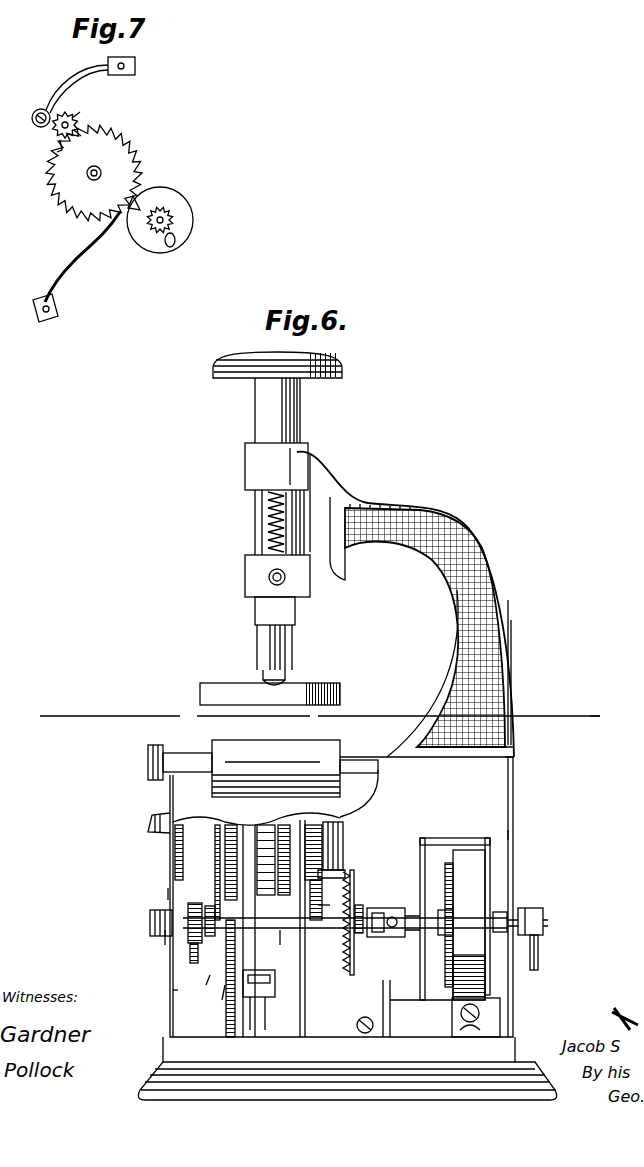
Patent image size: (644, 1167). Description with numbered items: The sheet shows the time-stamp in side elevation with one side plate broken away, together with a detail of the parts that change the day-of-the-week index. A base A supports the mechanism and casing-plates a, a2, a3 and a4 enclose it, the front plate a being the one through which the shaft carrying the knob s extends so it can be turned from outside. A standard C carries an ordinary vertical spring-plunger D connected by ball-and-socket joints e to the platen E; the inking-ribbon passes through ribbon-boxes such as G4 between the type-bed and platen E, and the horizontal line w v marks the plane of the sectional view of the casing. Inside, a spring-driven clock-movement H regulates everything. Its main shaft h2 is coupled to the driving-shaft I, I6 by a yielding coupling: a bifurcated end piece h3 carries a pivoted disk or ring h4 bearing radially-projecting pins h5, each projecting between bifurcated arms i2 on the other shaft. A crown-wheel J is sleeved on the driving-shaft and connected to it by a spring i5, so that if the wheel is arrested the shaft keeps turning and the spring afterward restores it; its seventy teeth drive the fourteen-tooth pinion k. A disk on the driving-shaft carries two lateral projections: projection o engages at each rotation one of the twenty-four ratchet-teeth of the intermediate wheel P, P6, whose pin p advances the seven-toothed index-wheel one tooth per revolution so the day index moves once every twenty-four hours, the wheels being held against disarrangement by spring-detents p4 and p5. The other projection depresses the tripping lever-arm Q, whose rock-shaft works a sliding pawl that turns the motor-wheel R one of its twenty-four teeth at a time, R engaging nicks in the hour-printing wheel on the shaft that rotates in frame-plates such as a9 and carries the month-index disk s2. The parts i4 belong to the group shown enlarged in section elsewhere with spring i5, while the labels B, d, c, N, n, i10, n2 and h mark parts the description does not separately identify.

In FIG. 7, the intermediate wheel P is at (94, 172).
In FIG. 7, the projecting pin p is at (61, 146).
In FIG. 7, the spring-detent p4 is at (83, 92).
In FIG. 7, the lateral projection o is at (139, 203).
In FIG. 7, the driving-shaft I is at (172, 217).
In FIG. 7, the spring-detent p5 is at (76, 267).
In FIG. 6, the vertical spring-plunger D is at (277, 466).
In FIG. 6, the standard C is at (276, 466).
In FIG. 6, the spring d is at (268, 509).
In FIG. 6, the lower guide block c is at (277, 576).
In FIG. 6, the ball-and-socket joints e is at (283, 662).
In FIG. 6, the platen E is at (277, 694).
In FIG. 6, the section line w is at (317, 712).
In FIG. 6, the section line v is at (600, 712).
In FIG. 6, the casing-plate a4 is at (511, 757).
In FIG. 6, the casing-plate a2 is at (341, 897).
In FIG. 6, the casing-plate a3 is at (520, 833).
In FIG. 6, the base A is at (347, 1068).
In FIG. 6, the ribbon-box G4 is at (276, 768).
In FIG. 6, the link B is at (365, 796).
In FIG. 6, the knob s is at (150, 823).
In FIG. 6, the type wheel N is at (284, 825).
In FIG. 6, the pinion k is at (343, 868).
In FIG. 6, the crown-wheel J is at (349, 922).
In FIG. 6, the driving-shaft I6 is at (150, 921).
In FIG. 6, the spring i5 is at (168, 894).
In FIG. 6, the driving-shaft part i4 is at (165, 935).
In FIG. 6, the ratchet n is at (194, 940).
In FIG. 6, the rack bar i10 is at (220, 978).
In FIG. 6, the front plate a is at (173, 990).
In FIG. 6, the motor-wheel R is at (262, 970).
In FIG. 6, the gear n2 is at (287, 947).
In FIG. 6, the frame-plate a9 is at (316, 986).
In FIG. 6, the intermediate wheel P6 is at (206, 858).
In FIG. 6, the tripping lever-arm Q is at (217, 878).
In FIG. 6, the month-index disk s2 is at (188, 857).
In FIG. 6, the bifurcated arms i2 is at (385, 910).
In FIG. 6, the radially-projecting pins h5 is at (386, 910).
In FIG. 6, the main shaft of the clockwork h2 is at (410, 912).
In FIG. 6, the disk or ring h4 is at (381, 960).
In FIG. 6, the bifurcated end piece h3 is at (392, 937).
In FIG. 6, the clock-movement H is at (455, 913).
In FIG. 6, the crank handle h is at (537, 939).